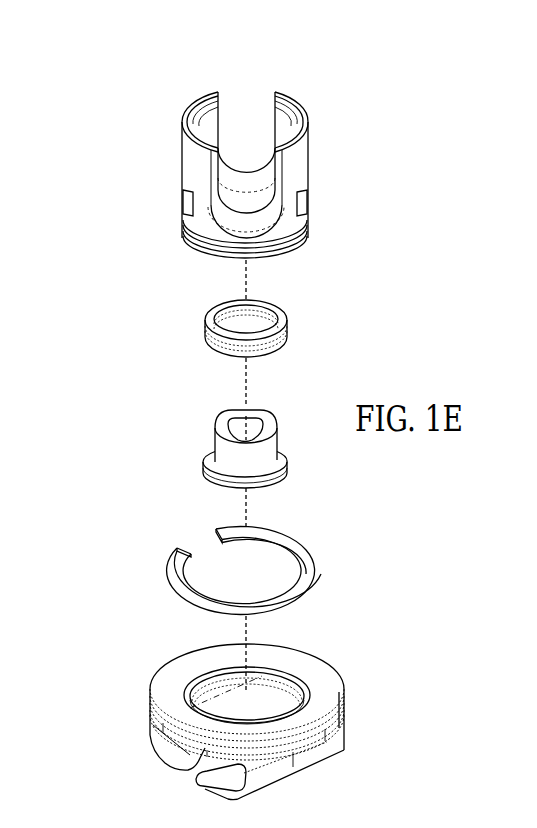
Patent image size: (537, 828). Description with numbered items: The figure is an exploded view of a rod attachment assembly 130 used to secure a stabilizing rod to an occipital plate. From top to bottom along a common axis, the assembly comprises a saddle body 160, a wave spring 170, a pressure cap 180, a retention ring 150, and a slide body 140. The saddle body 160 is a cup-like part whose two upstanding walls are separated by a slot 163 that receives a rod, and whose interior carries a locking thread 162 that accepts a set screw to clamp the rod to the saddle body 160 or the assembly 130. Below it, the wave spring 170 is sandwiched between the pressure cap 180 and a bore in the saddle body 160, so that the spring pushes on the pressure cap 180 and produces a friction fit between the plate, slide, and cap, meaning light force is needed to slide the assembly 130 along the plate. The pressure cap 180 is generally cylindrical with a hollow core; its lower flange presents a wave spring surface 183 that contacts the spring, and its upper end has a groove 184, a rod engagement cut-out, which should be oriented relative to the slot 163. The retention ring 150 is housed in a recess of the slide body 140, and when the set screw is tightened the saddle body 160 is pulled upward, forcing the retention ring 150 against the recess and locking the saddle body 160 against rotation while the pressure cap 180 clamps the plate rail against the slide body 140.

The rod attachment assembly 130 is at (92, 212).
The slide body 140 is at (145, 732).
The retention ring 150 is at (172, 566).
The saddle body 160 is at (311, 153).
The locking thread 162 is at (203, 117).
The slot 163 is at (264, 112).
The wave spring 170 is at (207, 330).
The pressure cap 180 is at (216, 436).
The wave spring surface 183 is at (290, 446).
The groove 184 is at (264, 412).